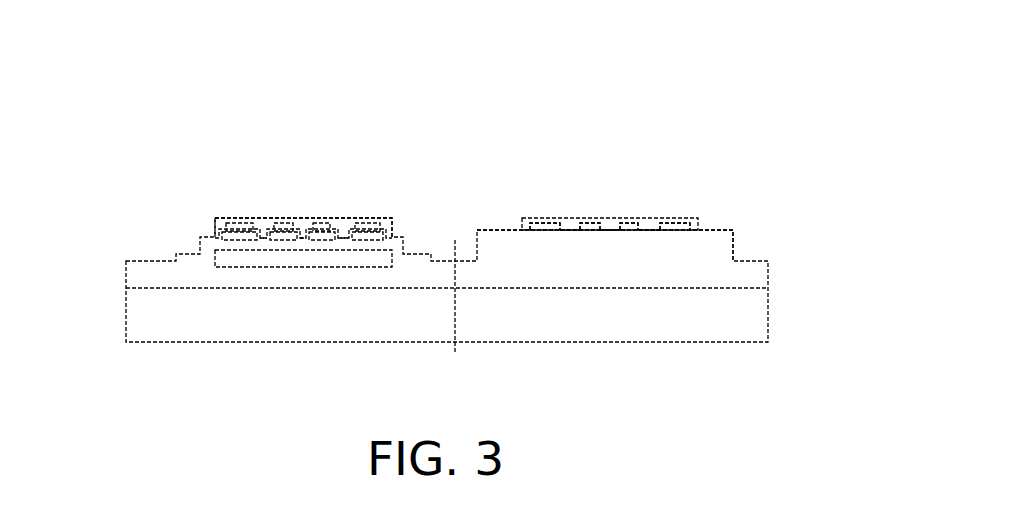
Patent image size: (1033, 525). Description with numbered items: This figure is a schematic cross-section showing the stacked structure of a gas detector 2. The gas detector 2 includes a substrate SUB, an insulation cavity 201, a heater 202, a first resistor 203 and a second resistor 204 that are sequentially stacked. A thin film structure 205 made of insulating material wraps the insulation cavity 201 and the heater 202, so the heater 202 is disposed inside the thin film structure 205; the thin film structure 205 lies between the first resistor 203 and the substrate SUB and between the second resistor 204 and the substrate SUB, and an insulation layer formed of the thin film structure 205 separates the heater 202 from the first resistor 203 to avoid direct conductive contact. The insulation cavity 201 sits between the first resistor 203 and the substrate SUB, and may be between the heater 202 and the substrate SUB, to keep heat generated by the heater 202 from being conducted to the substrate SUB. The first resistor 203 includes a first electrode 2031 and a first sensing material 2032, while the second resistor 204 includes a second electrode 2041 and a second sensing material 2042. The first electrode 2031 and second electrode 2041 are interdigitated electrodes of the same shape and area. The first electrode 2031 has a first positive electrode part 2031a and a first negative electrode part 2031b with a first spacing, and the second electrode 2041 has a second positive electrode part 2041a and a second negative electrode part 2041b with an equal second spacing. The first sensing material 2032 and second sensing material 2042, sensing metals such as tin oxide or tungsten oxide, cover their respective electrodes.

The gas detector 2 is at (53, 180).
The substrate SUB is at (238, 326).
The insulation cavity 201 is at (383, 258).
The heater 202 is at (386, 229).
The first resistor 203 is at (473, 12).
The first electrode 2031 is at (403, 2).
The first positive electrode part 2031a is at (230, 218).
The first negative electrode part 2031b is at (280, 218).
The first sensing material 2032 is at (301, 218).
The second resistor 204 is at (821, 12).
The second electrode 2041 is at (750, 2).
The second positive electrode part 2041a is at (537, 218).
The second negative electrode part 2041b is at (587, 218).
The second sensing material 2042 is at (607, 218).
The thin film structure 205 is at (723, 236).